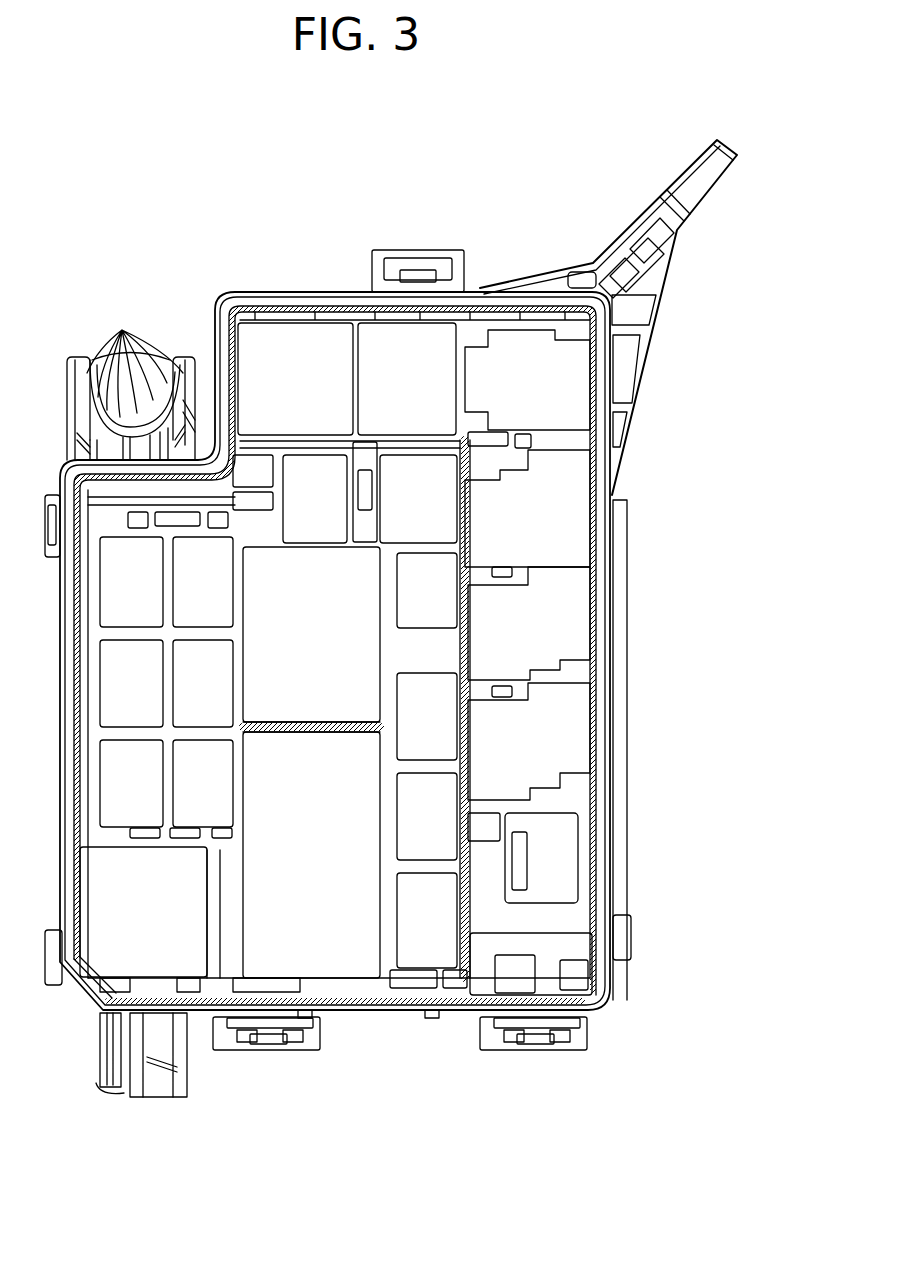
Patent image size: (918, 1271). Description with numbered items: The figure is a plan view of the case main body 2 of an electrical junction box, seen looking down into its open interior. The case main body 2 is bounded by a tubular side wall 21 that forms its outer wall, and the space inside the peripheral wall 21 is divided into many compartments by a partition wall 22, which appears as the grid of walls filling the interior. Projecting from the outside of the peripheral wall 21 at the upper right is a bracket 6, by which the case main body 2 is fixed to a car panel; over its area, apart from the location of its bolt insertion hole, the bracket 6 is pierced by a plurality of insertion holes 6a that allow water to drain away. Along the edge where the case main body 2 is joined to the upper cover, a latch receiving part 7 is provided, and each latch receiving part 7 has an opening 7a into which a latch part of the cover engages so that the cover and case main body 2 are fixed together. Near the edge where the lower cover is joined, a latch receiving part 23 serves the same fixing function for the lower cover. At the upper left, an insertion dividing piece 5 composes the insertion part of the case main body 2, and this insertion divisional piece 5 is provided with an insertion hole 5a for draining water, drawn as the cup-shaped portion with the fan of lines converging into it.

The case main body 2 is at (449, 168).
The insertion dividing piece 5 is at (78, 355).
The insertion hole 5a is at (135, 360).
The bracket 6 is at (681, 276).
The insertion holes 6a is at (648, 238).
The latch receiving part 7 is at (402, 248).
The engagement holes of locking tabs 7a is at (432, 266).
The side wall 21 is at (637, 782).
The partition wall 22 is at (462, 373).
The latch receiving part 23 is at (632, 942).